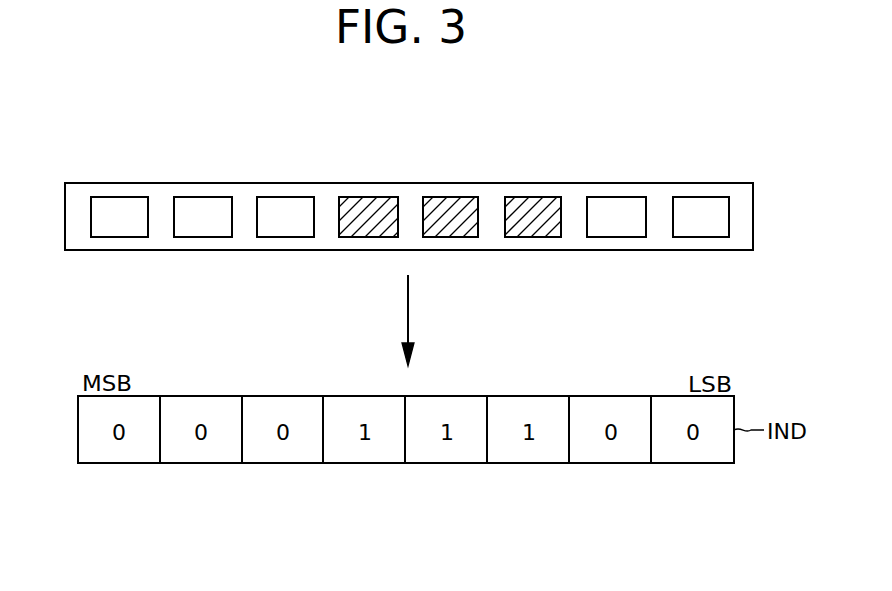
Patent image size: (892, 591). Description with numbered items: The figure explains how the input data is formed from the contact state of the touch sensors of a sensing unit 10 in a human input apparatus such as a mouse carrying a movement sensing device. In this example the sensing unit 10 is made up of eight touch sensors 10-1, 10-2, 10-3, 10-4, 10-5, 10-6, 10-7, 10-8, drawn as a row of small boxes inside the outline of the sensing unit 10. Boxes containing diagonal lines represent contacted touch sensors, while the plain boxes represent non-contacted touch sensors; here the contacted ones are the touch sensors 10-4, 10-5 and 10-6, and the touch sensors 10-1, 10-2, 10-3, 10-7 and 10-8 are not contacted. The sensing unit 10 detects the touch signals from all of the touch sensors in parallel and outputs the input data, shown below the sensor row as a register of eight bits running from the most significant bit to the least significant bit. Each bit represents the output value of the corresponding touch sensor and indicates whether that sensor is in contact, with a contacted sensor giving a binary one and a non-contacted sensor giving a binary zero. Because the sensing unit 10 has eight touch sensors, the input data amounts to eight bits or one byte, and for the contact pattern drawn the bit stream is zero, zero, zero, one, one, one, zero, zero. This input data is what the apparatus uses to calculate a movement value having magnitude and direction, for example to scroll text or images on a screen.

The sensing unit 10 is at (753, 215).
The touch sensor 10-1 is at (120, 197).
The touch sensor 10-2 is at (203, 197).
The touch sensor 10-3 is at (285, 197).
The touch sensor 10-4 is at (368, 197).
The touch sensor 10-5 is at (450, 197).
The touch sensor 10-6 is at (533, 197).
The touch sensor 10-7 is at (617, 197).
The touch sensor 10-8 is at (701, 197).